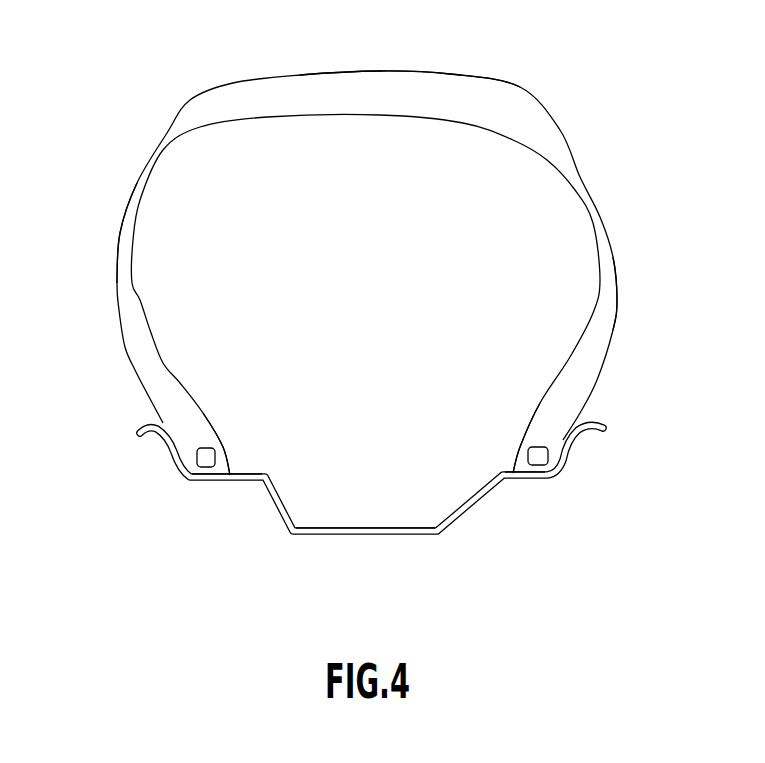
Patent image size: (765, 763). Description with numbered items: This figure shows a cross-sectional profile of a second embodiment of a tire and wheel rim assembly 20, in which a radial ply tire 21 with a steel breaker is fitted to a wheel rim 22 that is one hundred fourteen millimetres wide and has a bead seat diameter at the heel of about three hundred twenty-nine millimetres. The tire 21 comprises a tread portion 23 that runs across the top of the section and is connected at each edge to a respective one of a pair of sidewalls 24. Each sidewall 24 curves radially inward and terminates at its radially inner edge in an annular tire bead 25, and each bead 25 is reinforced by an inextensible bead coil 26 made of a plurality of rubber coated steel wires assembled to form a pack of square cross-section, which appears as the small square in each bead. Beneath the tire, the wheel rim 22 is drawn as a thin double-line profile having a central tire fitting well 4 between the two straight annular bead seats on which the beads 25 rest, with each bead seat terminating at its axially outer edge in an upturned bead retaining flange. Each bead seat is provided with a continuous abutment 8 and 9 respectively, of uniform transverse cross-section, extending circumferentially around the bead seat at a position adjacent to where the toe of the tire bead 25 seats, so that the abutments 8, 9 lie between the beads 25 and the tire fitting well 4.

The tire fitting well 4 is at (350, 528).
The continuous abutment 8 is at (497, 470).
The continuous abutment 9 is at (233, 475).
The tire and wheel rim assembly 20 is at (104, 232).
The radial ply tire 21 is at (562, 133).
The wheel rim 22 is at (466, 513).
The tread portion 23 is at (388, 88).
The sidewall 24 is at (125, 295).
The annular tire bead 25 is at (227, 447).
The inextensible bead coil 26 is at (210, 458).